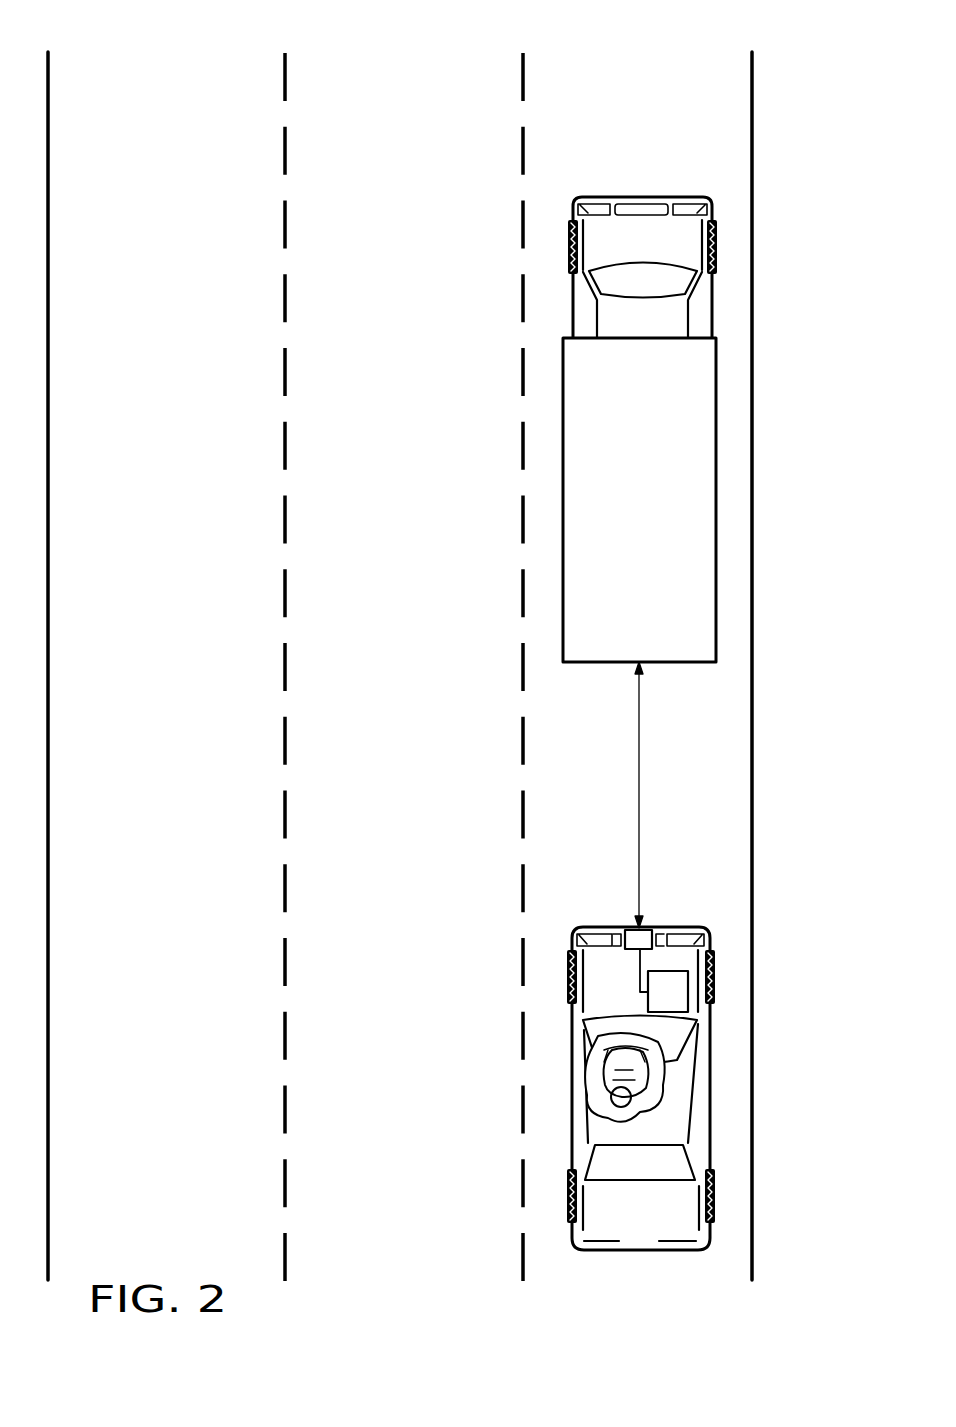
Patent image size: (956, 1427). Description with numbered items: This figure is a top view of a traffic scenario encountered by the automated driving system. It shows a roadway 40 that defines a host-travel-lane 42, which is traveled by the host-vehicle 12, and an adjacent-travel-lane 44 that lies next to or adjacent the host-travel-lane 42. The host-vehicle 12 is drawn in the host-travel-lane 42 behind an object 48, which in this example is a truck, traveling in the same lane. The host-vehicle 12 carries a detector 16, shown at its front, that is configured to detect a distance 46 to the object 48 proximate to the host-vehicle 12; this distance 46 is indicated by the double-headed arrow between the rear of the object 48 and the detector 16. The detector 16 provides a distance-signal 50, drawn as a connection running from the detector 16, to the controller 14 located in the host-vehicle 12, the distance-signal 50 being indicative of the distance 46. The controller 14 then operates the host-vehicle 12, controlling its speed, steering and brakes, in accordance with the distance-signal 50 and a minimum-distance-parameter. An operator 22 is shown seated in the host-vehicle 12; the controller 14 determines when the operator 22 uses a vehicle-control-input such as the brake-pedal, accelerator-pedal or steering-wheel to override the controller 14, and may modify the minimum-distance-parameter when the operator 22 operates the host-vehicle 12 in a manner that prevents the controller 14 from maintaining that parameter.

The host-vehicle 12 is at (708, 1130).
The controller 14 is at (683, 1001).
The detector 16 is at (655, 932).
The operator 22 is at (600, 1082).
The roadway 40 is at (752, 92).
The host-travel-lane 42 is at (663, 72).
The adjacent-travel-lane 44 is at (447, 68).
The distance 46 is at (639, 741).
The object 48 is at (717, 386).
The distance-signal 50 is at (640, 967).